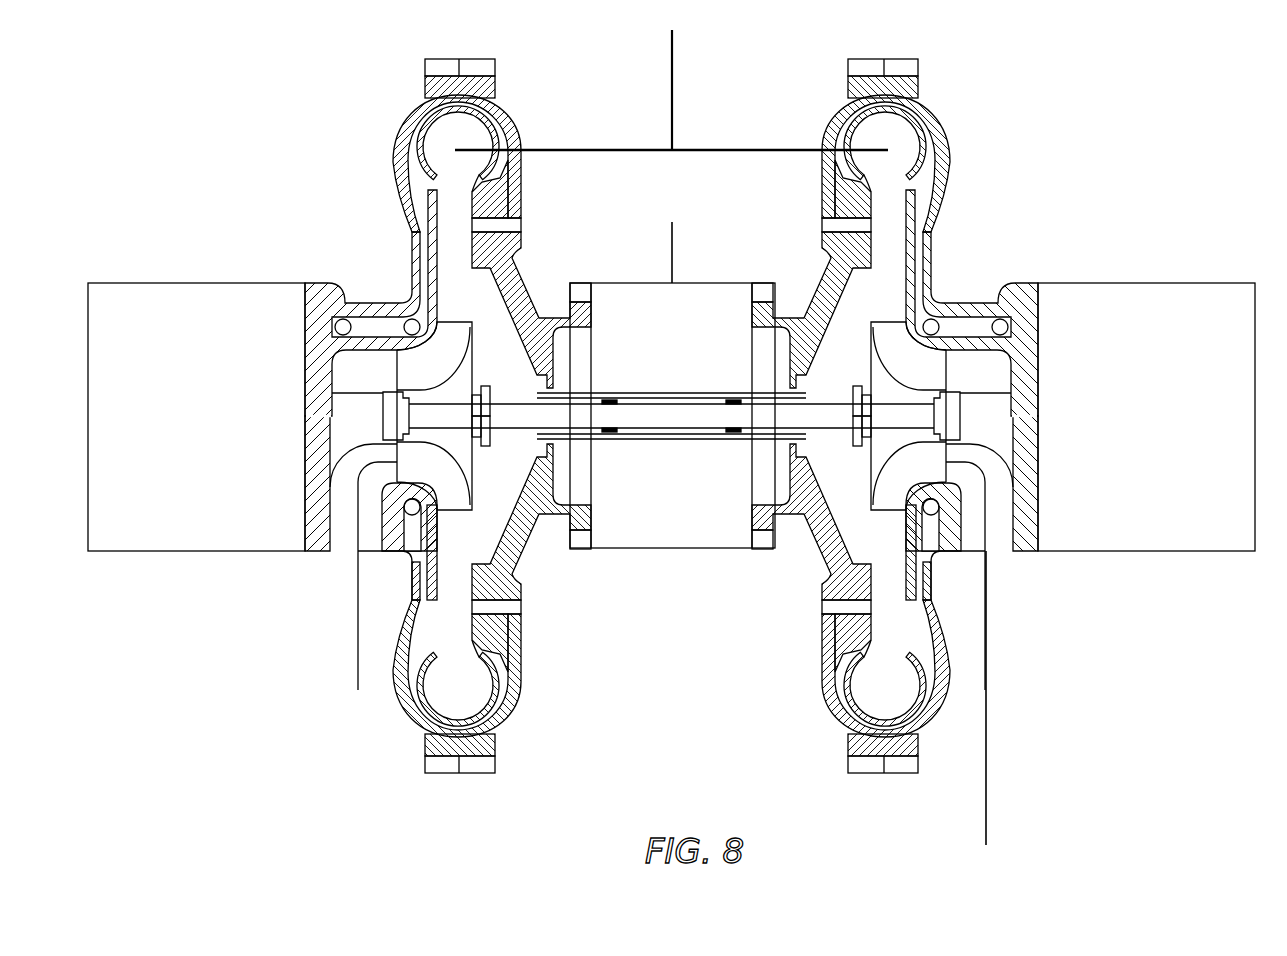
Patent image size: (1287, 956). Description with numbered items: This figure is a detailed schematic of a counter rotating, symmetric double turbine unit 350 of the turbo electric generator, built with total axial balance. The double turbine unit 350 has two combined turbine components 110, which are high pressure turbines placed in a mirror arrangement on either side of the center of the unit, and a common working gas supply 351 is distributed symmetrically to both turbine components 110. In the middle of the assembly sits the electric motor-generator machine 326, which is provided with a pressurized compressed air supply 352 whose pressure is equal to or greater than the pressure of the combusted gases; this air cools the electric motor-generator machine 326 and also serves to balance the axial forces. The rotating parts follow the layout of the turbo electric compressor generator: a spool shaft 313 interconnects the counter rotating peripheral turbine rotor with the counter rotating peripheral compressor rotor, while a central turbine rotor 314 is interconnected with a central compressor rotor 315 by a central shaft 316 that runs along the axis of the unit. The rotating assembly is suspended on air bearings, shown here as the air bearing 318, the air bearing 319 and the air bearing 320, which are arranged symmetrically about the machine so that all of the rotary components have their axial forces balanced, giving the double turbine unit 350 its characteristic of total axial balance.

The turbine components 110 is at (407, 115).
The spool shaft 313 is at (648, 392).
The central turbine rotor 314 is at (420, 470).
The central compressor rotor 315 is at (180, 283).
The central shaft 316 is at (695, 418).
The air bearing 318 is at (455, 297).
The air bearing 319 is at (1020, 438).
The air bearing 320 is at (332, 438).
The electric motor-generator machine 326 is at (635, 282).
The symmetric double turbine unit 350 is at (652, 698).
The common working gas supply 351 is at (665, 62).
The pressurized compressed air supply 352 is at (665, 232).